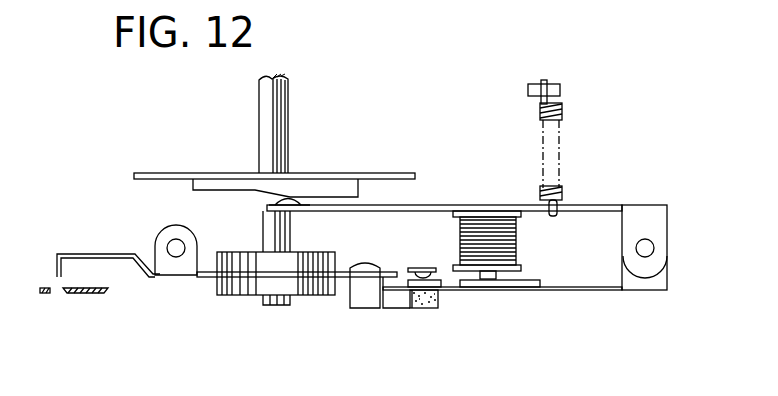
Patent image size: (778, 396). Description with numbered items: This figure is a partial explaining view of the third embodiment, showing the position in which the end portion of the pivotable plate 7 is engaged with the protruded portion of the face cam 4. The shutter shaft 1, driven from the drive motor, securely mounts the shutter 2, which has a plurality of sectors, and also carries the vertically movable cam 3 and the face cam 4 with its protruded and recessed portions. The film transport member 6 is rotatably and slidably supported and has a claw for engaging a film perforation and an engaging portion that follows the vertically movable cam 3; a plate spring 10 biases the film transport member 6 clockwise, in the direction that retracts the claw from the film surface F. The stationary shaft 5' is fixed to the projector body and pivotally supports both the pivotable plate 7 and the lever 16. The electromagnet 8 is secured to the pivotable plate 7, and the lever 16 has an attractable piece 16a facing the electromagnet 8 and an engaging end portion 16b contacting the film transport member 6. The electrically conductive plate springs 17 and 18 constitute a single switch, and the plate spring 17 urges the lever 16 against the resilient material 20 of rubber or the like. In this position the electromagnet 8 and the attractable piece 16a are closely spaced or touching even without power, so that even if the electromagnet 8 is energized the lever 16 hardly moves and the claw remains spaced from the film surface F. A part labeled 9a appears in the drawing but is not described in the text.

The shutter shaft 1 is at (290, 106).
The shutter 2 is at (170, 172).
The vertically movable cam 3 is at (240, 296).
The face cam 4 is at (341, 185).
The stationary shaft 5' is at (628, 247).
The film transport member 6 is at (204, 278).
The pivotable plate 7 is at (598, 204).
The electromagnet 8 is at (518, 238).
The bushing 9a is at (291, 206).
The plate spring 10 is at (355, 292).
The lever 16 is at (575, 291).
The attractable piece 16a is at (540, 280).
The engaging end portion 16b is at (388, 309).
The plate spring 17 is at (443, 279).
The plate spring 18 is at (425, 268).
The resilient material 20 is at (440, 300).
The film surface F is at (86, 296).